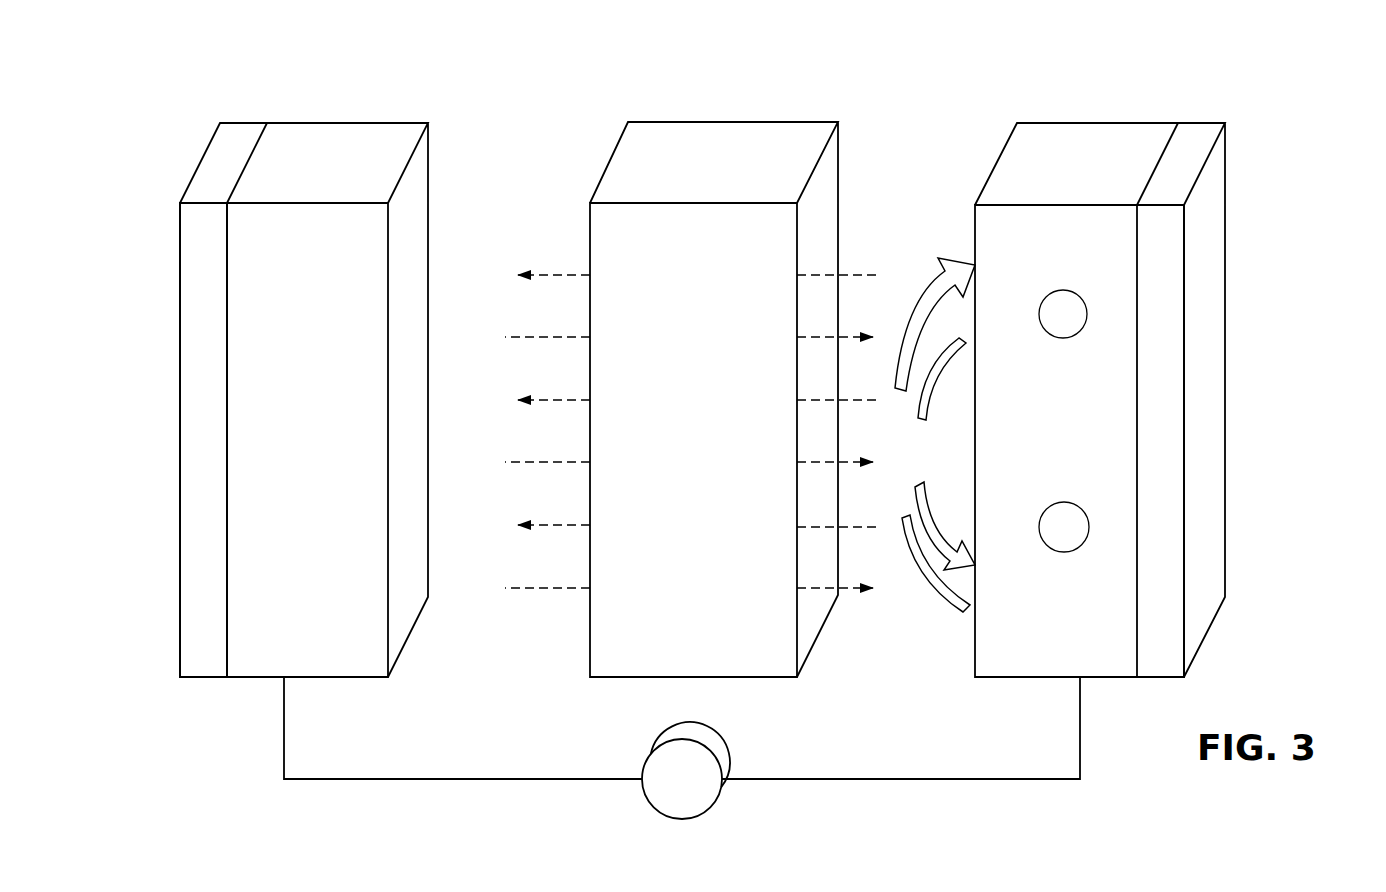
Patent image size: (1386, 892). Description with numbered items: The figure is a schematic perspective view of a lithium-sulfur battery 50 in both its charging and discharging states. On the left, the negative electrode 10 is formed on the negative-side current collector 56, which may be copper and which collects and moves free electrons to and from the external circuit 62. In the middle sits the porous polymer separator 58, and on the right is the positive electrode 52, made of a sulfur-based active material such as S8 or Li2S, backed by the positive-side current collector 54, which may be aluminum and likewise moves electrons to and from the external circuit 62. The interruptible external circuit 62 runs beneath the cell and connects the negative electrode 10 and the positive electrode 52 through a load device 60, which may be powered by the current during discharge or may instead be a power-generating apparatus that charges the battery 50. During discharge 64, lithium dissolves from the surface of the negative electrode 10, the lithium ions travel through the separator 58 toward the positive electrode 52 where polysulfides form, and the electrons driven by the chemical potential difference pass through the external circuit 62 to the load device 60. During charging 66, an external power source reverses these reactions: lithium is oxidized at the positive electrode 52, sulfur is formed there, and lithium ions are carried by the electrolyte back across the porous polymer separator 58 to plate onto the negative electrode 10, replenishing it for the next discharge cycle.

The negative electrode material 10 is at (317, 277).
The lithium-sulfur battery 50 is at (1248, 67).
The positive electrode 52 is at (1076, 433).
The positive-side current collector 54 is at (1200, 235).
The negative-side current collector 56 is at (203, 533).
The porous polymer separator 58 is at (712, 160).
The load device 60 is at (694, 797).
The external circuit 62 is at (968, 780).
The battery discharge 64 is at (846, 325).
The battery charging 66 is at (556, 272).